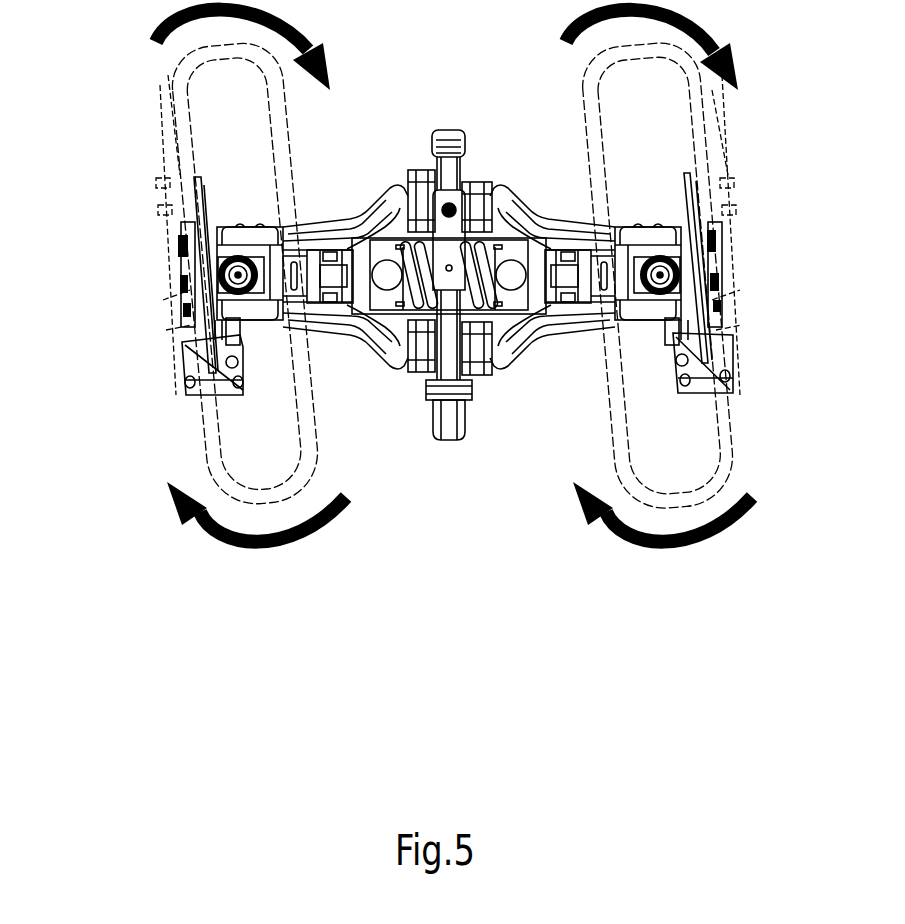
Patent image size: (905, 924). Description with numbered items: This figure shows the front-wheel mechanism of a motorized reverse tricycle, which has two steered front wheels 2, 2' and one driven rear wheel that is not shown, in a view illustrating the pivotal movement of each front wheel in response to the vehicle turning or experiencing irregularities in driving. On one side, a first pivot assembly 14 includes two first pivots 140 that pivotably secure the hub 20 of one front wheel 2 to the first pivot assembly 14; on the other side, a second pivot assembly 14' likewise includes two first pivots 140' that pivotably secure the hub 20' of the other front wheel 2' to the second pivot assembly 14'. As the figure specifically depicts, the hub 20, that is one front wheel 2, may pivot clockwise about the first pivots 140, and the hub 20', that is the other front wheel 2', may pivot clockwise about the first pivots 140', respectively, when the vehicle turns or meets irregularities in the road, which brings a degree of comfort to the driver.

The front wheel 2 is at (212, 271).
The front wheel 2' is at (627, 276).
The first pivot assembly 14 is at (152, 231).
The second pivot assembly 14' is at (746, 261).
The first pivots 140 is at (186, 284).
The first pivots 140' is at (717, 278).
The hub 20 is at (142, 235).
The hub 20' is at (771, 235).